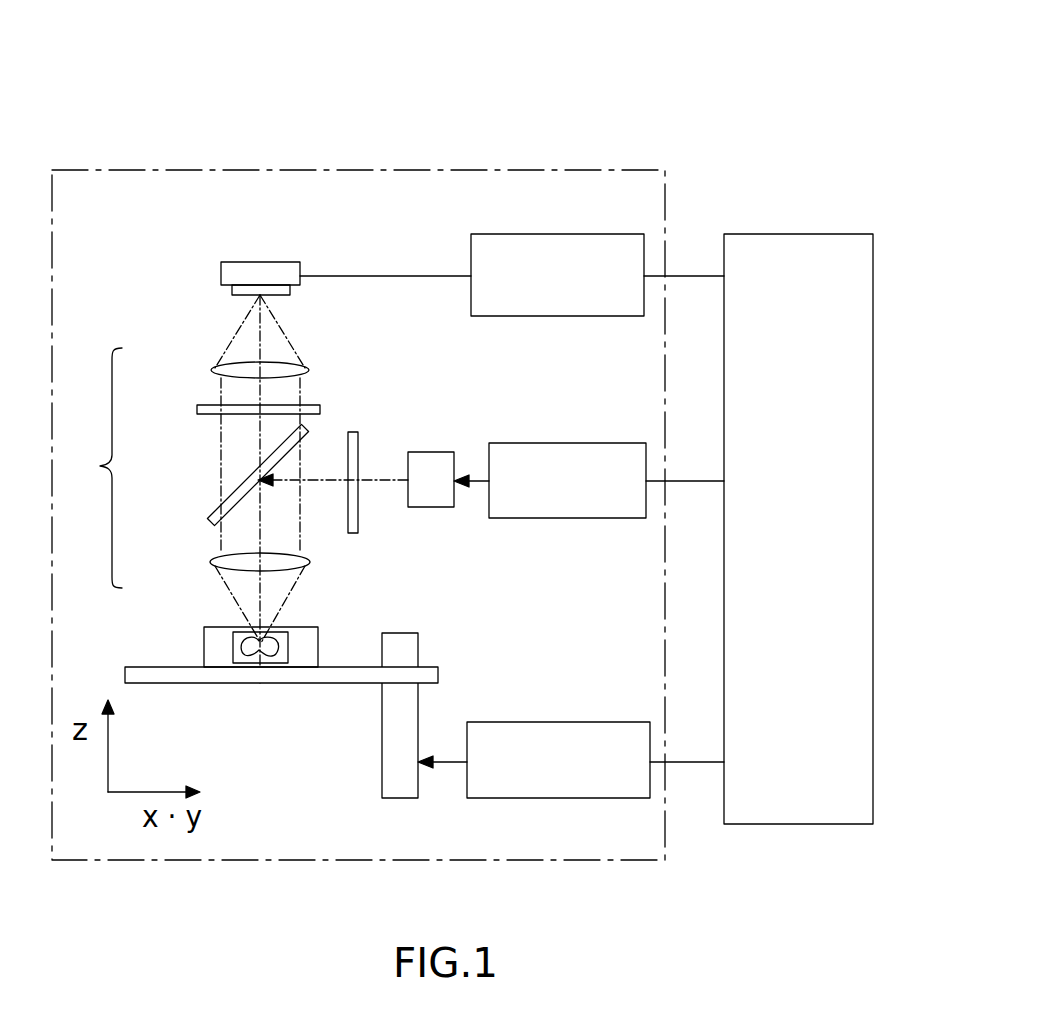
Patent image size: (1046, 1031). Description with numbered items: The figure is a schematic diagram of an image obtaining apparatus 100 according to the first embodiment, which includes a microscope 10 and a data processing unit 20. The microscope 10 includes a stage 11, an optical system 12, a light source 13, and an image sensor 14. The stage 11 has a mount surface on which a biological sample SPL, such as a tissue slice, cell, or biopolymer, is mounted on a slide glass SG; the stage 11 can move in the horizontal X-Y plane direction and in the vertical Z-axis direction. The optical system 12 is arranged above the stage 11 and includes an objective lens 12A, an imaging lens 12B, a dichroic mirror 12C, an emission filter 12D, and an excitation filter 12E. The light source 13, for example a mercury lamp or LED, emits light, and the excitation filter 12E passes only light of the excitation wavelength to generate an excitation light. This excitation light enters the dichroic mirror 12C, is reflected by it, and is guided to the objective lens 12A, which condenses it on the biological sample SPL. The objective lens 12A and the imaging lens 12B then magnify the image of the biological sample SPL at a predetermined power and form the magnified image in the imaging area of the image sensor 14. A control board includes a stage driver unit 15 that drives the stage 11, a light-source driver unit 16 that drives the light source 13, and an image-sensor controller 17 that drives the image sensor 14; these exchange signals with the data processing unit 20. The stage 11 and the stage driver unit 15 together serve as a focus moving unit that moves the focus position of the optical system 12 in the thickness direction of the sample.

The image obtaining apparatus 100 is at (727, 92).
The microscope 10 is at (528, 170).
The stage 11 is at (438, 672).
The optical system 12 is at (92, 468).
The objective lens 12A is at (210, 562).
The imaging lens 12B is at (212, 368).
The dichroic mirror 12C is at (208, 523).
The emission filter 12D is at (197, 409).
The excitation filter 12E is at (354, 431).
The light source 13 is at (438, 452).
The image sensor 14 is at (268, 262).
The stage driver unit 15 is at (567, 722).
The light-source driver unit 16 is at (561, 443).
The image-sensor controller 17 is at (577, 234).
The data processing unit 20 is at (810, 234).
The slide glass SG is at (204, 640).
The biological sample SPL is at (290, 645).